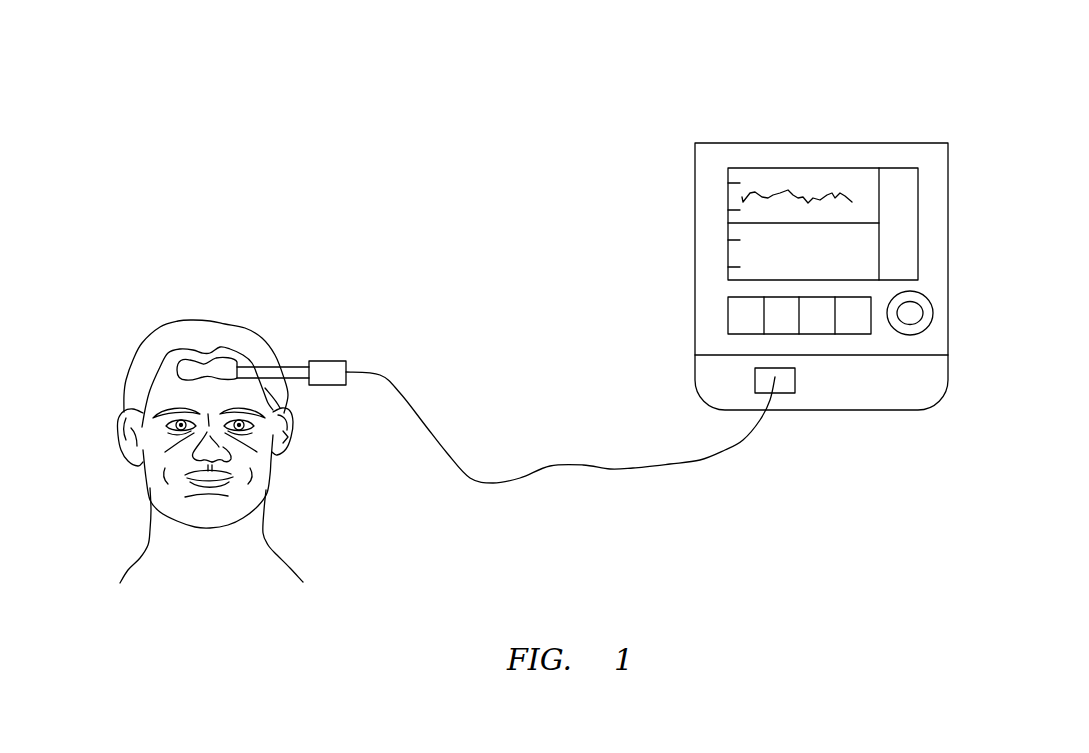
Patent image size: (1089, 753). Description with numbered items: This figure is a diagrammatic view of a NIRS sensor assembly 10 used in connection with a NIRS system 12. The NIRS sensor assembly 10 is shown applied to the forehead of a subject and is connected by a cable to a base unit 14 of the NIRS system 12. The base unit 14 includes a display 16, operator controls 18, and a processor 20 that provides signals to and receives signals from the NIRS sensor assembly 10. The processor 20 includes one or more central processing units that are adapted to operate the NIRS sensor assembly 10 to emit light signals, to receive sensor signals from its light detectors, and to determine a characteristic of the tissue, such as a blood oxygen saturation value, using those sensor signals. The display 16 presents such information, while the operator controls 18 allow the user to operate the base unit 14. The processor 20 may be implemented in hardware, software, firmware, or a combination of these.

The NIRS sensor assembly 10 is at (227, 359).
The NIRS system 12 is at (377, 190).
The base unit 14 is at (814, 108).
The display 16 is at (867, 183).
The operator controls 18 is at (931, 323).
The processor 20 is at (933, 142).